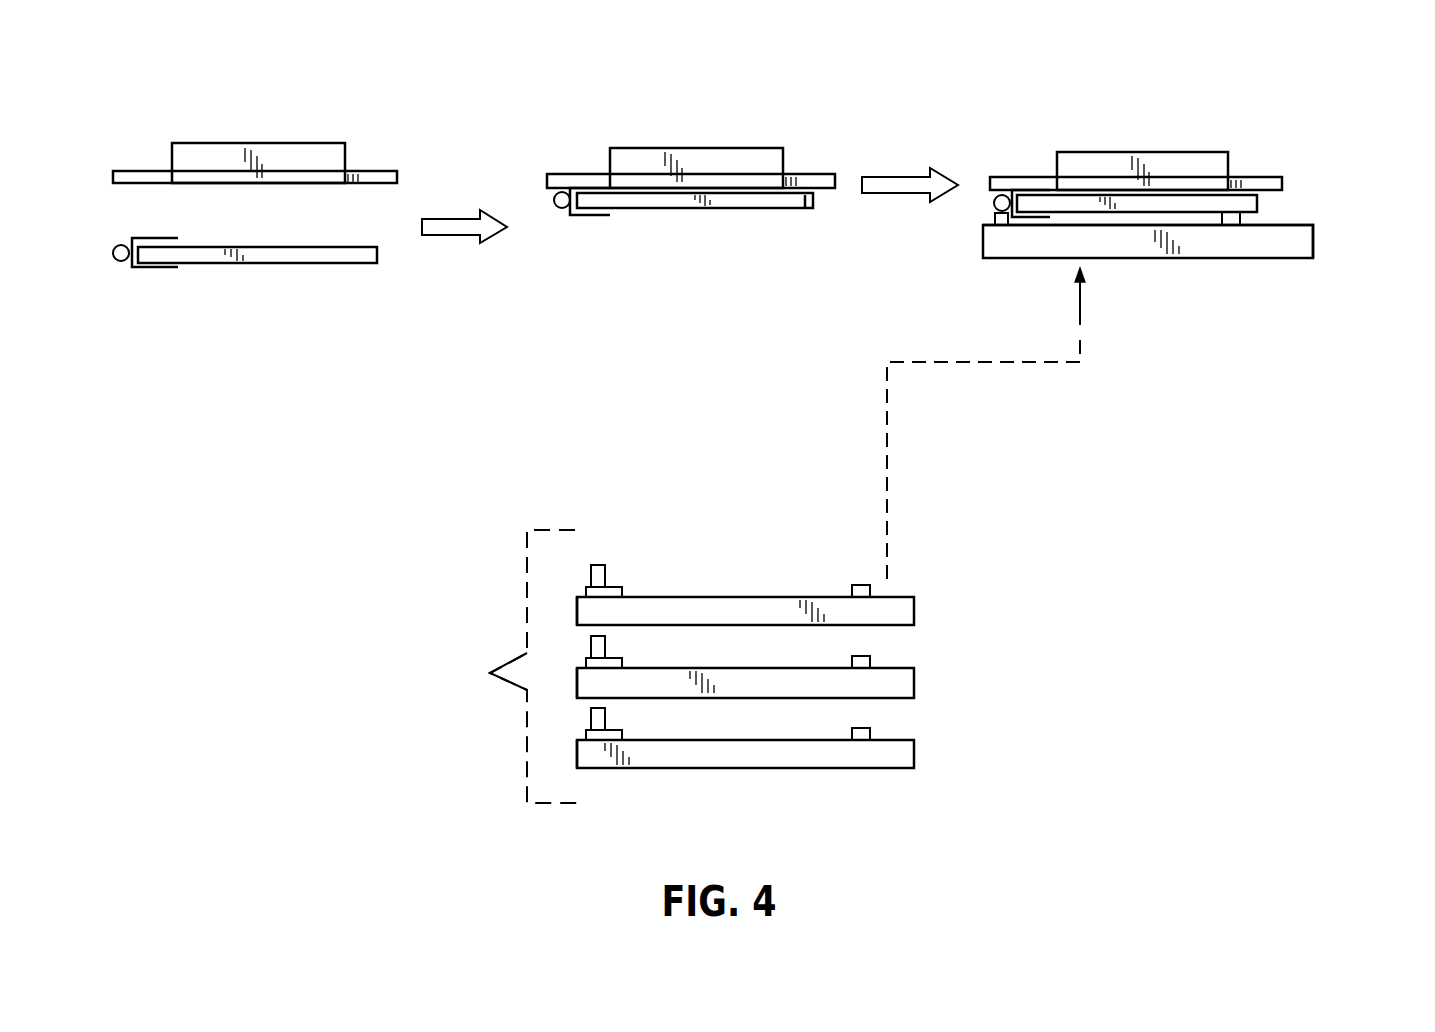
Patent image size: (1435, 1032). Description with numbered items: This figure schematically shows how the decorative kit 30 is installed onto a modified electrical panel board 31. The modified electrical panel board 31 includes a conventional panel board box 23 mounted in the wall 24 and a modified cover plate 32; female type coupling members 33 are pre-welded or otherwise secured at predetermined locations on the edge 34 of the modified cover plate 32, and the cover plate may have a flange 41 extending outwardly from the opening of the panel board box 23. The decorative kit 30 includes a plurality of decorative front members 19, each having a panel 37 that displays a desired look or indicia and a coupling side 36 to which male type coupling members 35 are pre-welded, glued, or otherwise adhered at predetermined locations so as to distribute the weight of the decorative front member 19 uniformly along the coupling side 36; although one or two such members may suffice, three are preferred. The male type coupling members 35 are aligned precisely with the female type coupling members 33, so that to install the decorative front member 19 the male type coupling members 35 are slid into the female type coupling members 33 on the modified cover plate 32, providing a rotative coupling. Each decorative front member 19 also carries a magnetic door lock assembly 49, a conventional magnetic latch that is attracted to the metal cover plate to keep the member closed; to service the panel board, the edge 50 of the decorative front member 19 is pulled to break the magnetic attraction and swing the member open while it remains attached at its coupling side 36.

The decorative front member 19 is at (1290, 240).
The panel board box 23 is at (185, 163).
The wall 24 is at (148, 184).
The decorative kit 30 is at (503, 668).
The modified electrical panel board 31 is at (362, 157).
The modified cover plate 32 is at (288, 258).
The female type coupling member 33 is at (118, 263).
The edge 34 is at (158, 253).
The male type coupling member 35 is at (1003, 230).
The coupling side 36 is at (577, 610).
The panel 37 is at (1145, 248).
The flange 41 is at (806, 210).
The magnetic door lock assembly 49 is at (1235, 228).
The edge 50 is at (1315, 244).